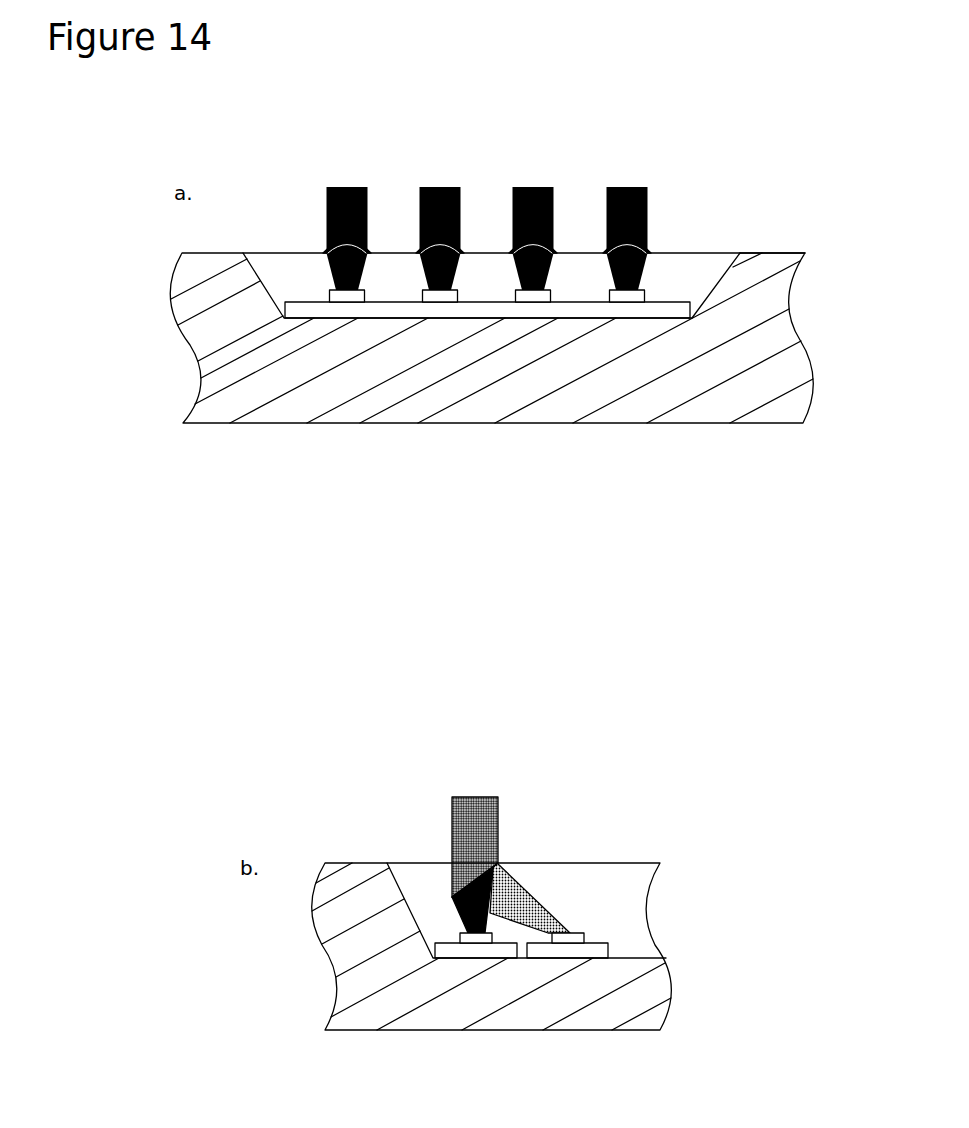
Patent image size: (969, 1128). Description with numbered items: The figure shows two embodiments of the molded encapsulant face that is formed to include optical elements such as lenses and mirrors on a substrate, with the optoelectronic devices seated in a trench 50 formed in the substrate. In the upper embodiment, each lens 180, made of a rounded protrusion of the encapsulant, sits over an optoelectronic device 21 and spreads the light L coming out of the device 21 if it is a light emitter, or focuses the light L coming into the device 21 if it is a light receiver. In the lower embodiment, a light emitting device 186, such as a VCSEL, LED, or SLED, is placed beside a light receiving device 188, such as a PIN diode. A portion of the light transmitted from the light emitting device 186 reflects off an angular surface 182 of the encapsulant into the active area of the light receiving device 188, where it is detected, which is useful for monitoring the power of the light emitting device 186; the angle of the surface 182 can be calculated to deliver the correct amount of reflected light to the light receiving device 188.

The optoelectronic device 21 is at (488, 313).
The trench 50 is at (725, 280).
The light L is at (343, 187).
The lens 180 is at (327, 249).
The angular surface 182 is at (483, 878).
The light emitting device 186 is at (473, 952).
The light receiving device 188 is at (573, 953).